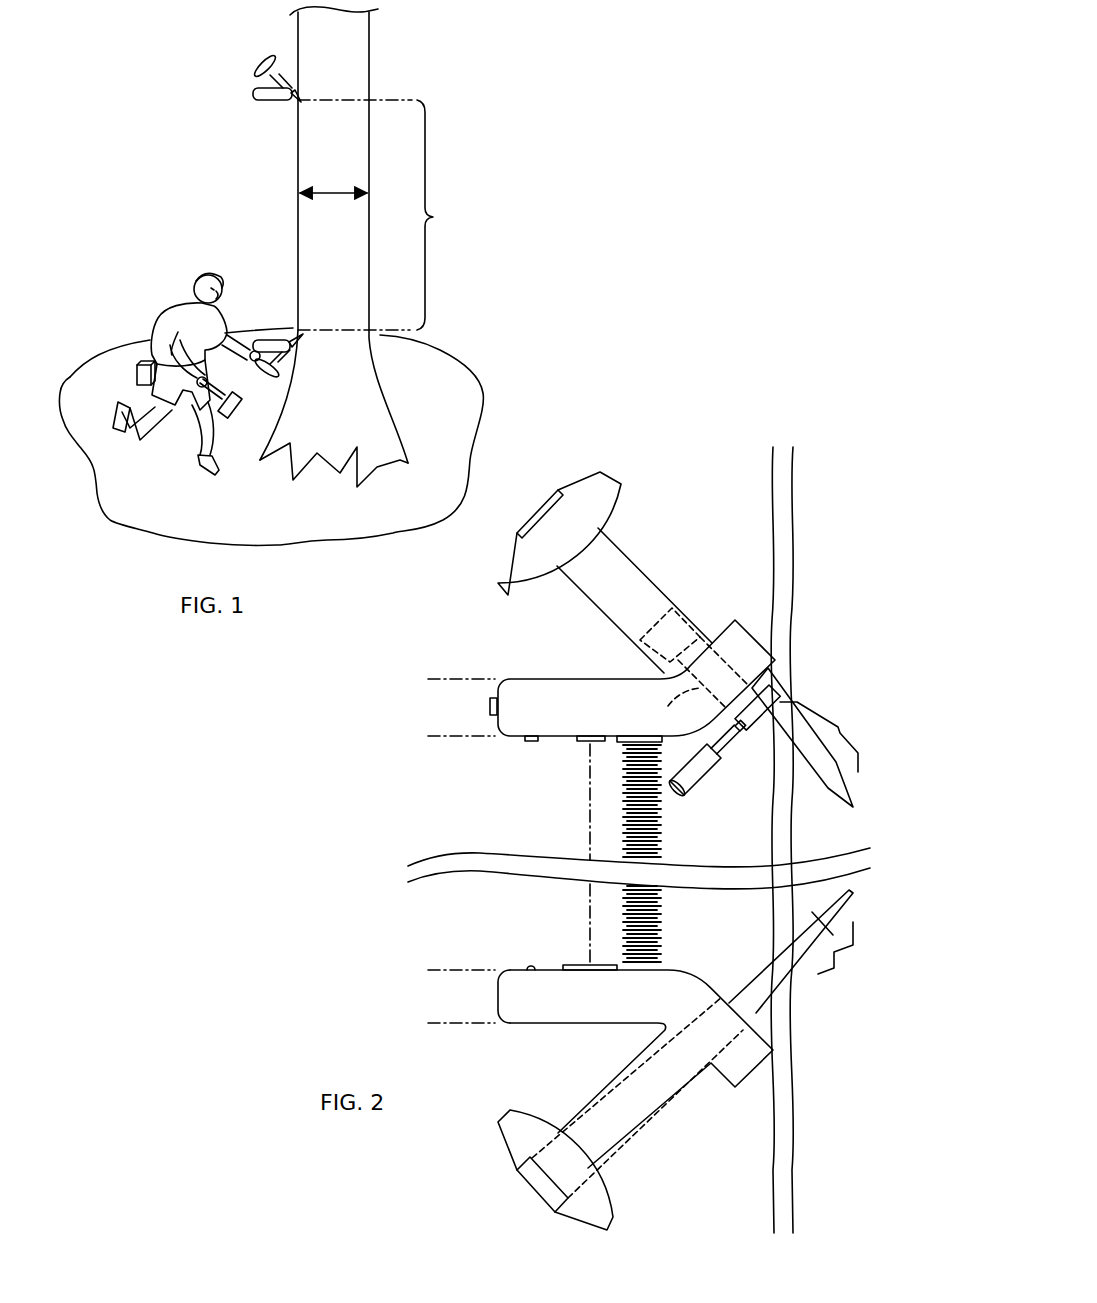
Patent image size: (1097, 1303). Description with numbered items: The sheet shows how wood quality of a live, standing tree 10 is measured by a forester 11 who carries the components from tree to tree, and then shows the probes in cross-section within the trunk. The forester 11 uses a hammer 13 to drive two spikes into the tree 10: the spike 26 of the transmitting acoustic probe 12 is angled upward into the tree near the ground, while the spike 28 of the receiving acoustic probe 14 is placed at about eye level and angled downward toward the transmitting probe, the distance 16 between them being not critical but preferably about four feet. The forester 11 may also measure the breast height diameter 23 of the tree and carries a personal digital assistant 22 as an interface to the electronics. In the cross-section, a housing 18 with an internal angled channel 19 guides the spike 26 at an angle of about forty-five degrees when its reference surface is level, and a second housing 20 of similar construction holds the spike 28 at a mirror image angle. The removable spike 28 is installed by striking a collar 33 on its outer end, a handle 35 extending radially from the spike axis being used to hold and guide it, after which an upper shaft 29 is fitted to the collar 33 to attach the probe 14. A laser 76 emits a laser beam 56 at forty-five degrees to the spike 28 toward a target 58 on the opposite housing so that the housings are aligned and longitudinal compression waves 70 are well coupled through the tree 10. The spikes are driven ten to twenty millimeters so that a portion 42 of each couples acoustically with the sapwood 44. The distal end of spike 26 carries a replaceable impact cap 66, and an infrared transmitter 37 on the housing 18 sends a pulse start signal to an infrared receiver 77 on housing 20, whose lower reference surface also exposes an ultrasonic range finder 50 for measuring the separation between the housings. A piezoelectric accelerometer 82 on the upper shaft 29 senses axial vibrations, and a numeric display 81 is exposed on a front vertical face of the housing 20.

In FIG. 1, the tree 10 is at (369, 52).
In FIG. 2, the tree 10 is at (806, 525).
In FIG. 1, the forester 11 is at (178, 270).
In FIG. 1, the transmitting acoustic probe 12 is at (270, 370).
In FIG. 2, the transmitting acoustic probe 12 is at (603, 1078).
In FIG. 1, the hammer 13 is at (238, 410).
In FIG. 1, the receiving acoustic probe 14 is at (258, 62).
In FIG. 2, the receiving acoustic probe 14 is at (629, 688).
In FIG. 1, the distance 16 is at (379, 215).
In FIG. 2, the housing 18 is at (598, 1025).
In FIG. 2, the internal angled channel 19 is at (732, 1040).
In FIG. 2, the second housing 20 is at (597, 709).
In FIG. 1, the personal digital assistant 22 is at (133, 357).
In FIG. 1, the breast height diameter 23 is at (333, 192).
In FIG. 2, the spike 26 is at (851, 885).
In FIG. 2, the spike 28 is at (838, 800).
In FIG. 2, the upper shaft 29 is at (694, 677).
In FIG. 2, the collar 33 is at (772, 700).
In FIG. 2, the handle 35 is at (703, 787).
In FIG. 2, the infrared transmitter 37 is at (530, 965).
In FIG. 2, the portion of the spikes 42 is at (819, 848).
In FIG. 2, the sapwood 44 is at (823, 621).
In FIG. 2, the ultrasonic range finder 50 is at (615, 750).
In FIG. 2, the laser beam 56 is at (590, 828).
In FIG. 2, the target 58 is at (582, 965).
In FIG. 2, the impact cap 66 is at (537, 1192).
In FIG. 2, the longitudinal compression waves 70 is at (828, 904).
In FIG. 2, the laser 76 is at (582, 742).
In FIG. 2, the infrared receiver 77 is at (530, 742).
In FIG. 2, the numeric display 81 is at (490, 707).
In FIG. 2, the piezoelectric accelerometer 82 is at (674, 607).